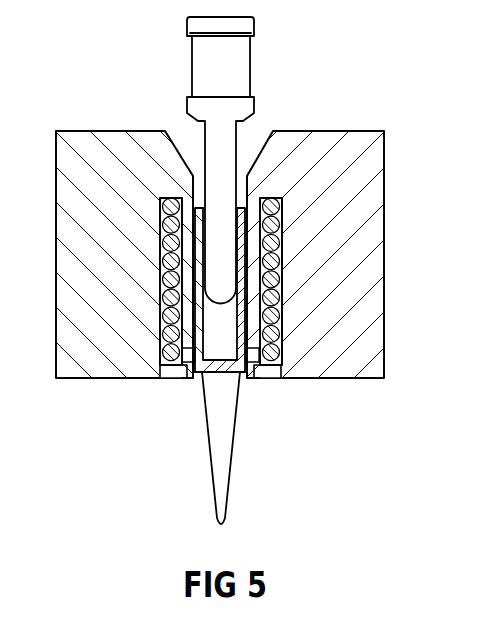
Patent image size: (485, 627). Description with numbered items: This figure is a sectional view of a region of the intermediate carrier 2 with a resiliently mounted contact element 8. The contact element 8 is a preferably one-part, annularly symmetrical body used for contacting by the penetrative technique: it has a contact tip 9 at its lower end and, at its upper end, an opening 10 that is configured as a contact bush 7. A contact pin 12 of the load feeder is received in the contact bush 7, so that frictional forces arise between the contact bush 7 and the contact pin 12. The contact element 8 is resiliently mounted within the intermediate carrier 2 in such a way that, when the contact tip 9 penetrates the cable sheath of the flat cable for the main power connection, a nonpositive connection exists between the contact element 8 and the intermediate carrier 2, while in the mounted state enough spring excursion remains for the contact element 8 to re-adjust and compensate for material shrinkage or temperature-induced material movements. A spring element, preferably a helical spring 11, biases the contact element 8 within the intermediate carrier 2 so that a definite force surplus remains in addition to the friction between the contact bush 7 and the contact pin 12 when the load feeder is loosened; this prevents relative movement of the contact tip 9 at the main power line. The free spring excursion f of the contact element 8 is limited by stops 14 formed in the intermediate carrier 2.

The intermediate carrier 2 is at (88, 342).
The contact bush 7 is at (247, 214).
The contact element 8 is at (218, 366).
The contact tip 9 is at (222, 452).
The opening 10 is at (220, 333).
The helical spring 11 is at (268, 240).
The contact pin 12 is at (240, 62).
The stop 14 is at (172, 357).
The free spring excursion f is at (189, 378).